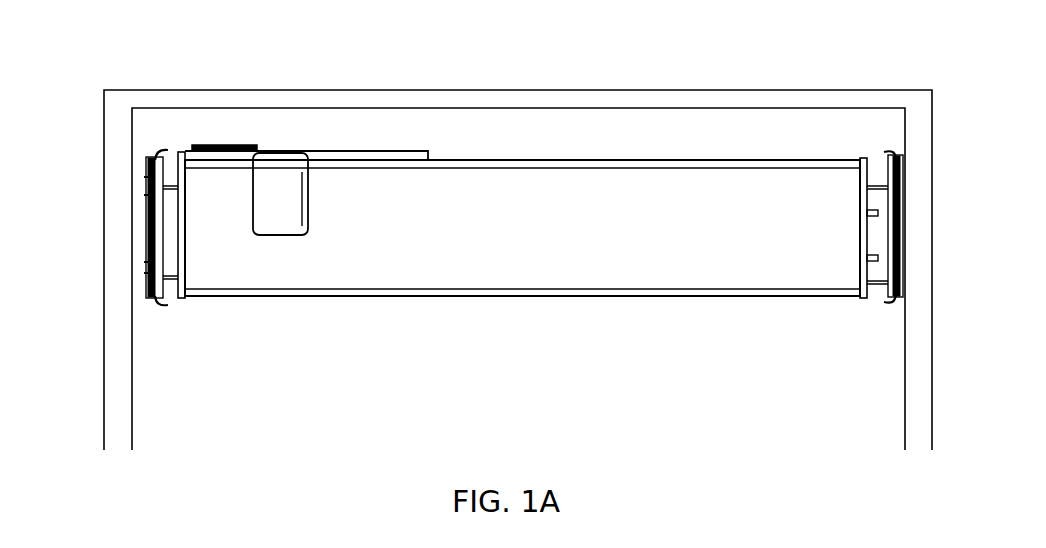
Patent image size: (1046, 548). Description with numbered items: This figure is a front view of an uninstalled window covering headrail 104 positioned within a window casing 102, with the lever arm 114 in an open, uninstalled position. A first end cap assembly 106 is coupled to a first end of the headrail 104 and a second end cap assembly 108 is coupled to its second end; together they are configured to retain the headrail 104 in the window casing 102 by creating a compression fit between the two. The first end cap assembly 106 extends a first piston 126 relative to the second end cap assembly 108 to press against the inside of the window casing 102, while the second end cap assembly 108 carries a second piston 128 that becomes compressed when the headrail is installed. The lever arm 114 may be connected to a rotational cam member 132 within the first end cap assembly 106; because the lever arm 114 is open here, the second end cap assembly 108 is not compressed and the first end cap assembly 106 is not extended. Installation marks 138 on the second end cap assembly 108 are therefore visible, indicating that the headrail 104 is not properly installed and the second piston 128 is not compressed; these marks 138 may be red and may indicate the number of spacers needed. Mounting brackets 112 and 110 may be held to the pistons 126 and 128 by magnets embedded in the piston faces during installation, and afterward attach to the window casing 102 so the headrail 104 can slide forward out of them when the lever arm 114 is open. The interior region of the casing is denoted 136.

The window casing 102 is at (115, 308).
The headrail 104 is at (563, 254).
The first end cap assembly 106 is at (177, 307).
The second end cap assembly 108 is at (878, 302).
The mounting bracket 110 is at (892, 157).
The mounting bracket 112 is at (155, 302).
The lever arm 114 is at (273, 223).
The first piston 126 is at (173, 217).
The second piston 128 is at (880, 197).
The rotational cam member 132 is at (222, 143).
The housing interior 136 is at (541, 422).
The installation marks 138 is at (873, 215).